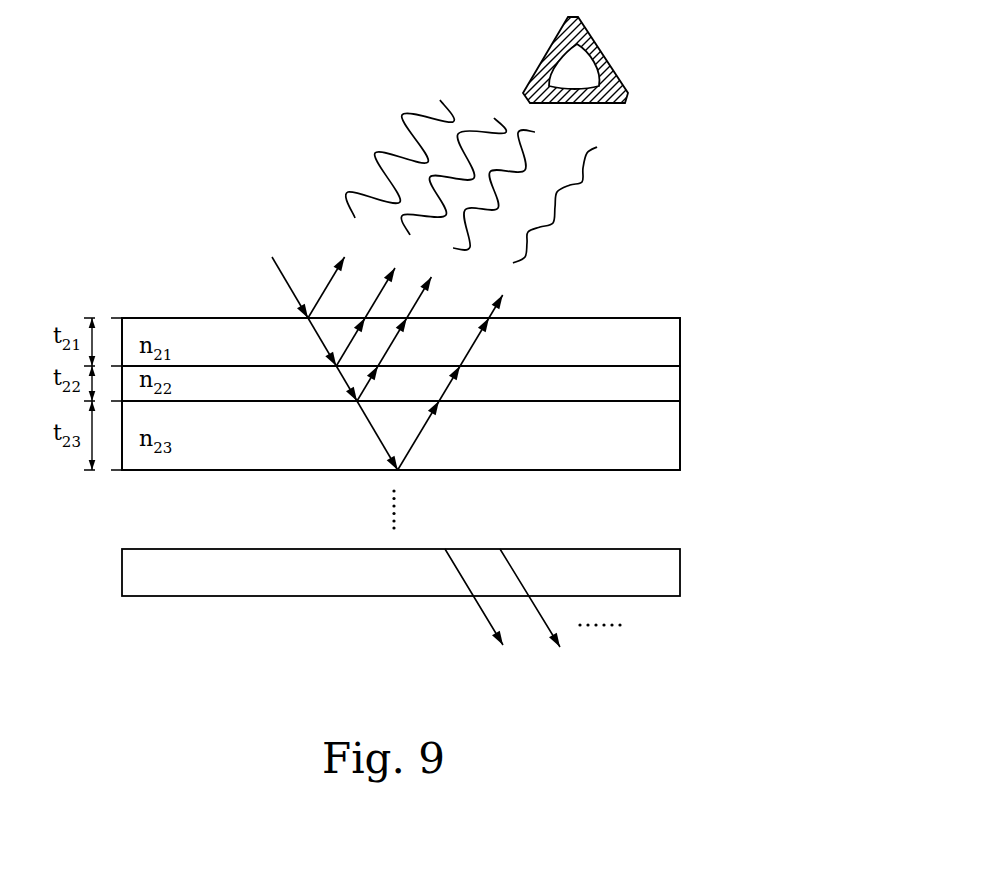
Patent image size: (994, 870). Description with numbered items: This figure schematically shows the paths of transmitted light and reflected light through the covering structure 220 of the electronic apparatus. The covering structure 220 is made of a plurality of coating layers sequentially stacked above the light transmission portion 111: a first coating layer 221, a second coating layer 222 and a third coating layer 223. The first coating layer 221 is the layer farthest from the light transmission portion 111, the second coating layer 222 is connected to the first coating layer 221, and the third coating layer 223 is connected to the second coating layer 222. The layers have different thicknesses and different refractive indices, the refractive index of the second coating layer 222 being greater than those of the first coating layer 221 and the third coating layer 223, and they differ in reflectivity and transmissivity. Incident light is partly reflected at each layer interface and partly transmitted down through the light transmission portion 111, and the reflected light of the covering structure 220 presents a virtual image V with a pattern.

The covering structure 220 is at (743, 322).
The first coating layer 221 is at (668, 345).
The second coating layer 222 is at (668, 387).
The third coating layer 223 is at (668, 439).
The light transmission portion 111 is at (668, 574).
The virtual image V is at (613, 60).